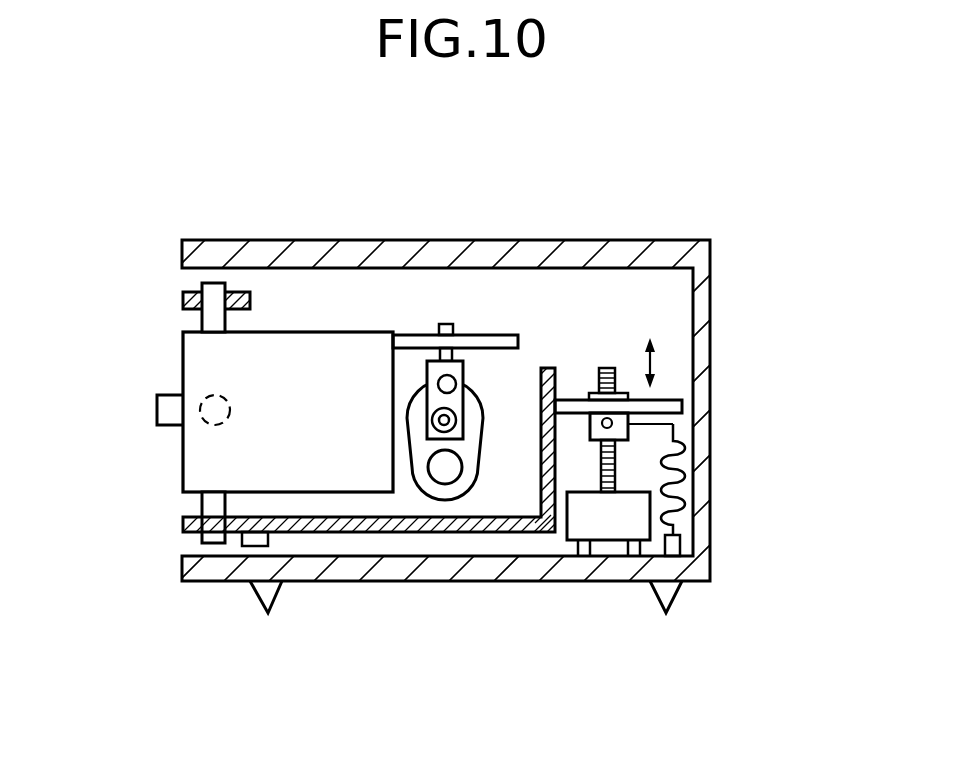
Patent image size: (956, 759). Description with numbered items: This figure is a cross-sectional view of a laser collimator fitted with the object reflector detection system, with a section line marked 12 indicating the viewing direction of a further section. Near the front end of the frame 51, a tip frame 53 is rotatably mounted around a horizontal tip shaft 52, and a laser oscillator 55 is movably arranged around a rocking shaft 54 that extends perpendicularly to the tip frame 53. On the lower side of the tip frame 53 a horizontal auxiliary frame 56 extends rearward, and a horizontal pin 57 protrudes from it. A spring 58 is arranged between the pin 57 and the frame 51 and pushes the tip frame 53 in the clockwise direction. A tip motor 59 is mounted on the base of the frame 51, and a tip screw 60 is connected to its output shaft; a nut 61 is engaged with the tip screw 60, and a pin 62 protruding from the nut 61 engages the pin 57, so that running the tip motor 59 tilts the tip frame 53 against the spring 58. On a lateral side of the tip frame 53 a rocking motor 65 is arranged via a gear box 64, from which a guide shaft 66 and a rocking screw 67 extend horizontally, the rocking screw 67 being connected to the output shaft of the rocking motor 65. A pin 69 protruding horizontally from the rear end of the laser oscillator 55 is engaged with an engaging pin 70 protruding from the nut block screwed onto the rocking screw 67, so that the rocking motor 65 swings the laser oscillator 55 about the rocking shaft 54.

The section line 12- 12 is at (528, 232).
The frame 51 is at (612, 241).
The horizontal tip shaft 52 is at (212, 428).
The tip frame 53 is at (181, 300).
The rocking shaft 54 is at (213, 283).
The laser oscillator 55 is at (304, 466).
The horizontal auxiliary frame 56 is at (430, 533).
The pin 57 is at (655, 400).
The spring 58 is at (681, 483).
The tip motor 59 is at (622, 518).
The tip screw 60 is at (609, 368).
The nut 61 is at (691, 428).
The pin 62 is at (584, 436).
The gear box 64 is at (410, 476).
The rocking motor 65 is at (446, 474).
The guide shaft 66 is at (453, 383).
The rocking screw 67 is at (452, 423).
The pin 69 is at (414, 335).
The engaging pin 70 is at (444, 324).